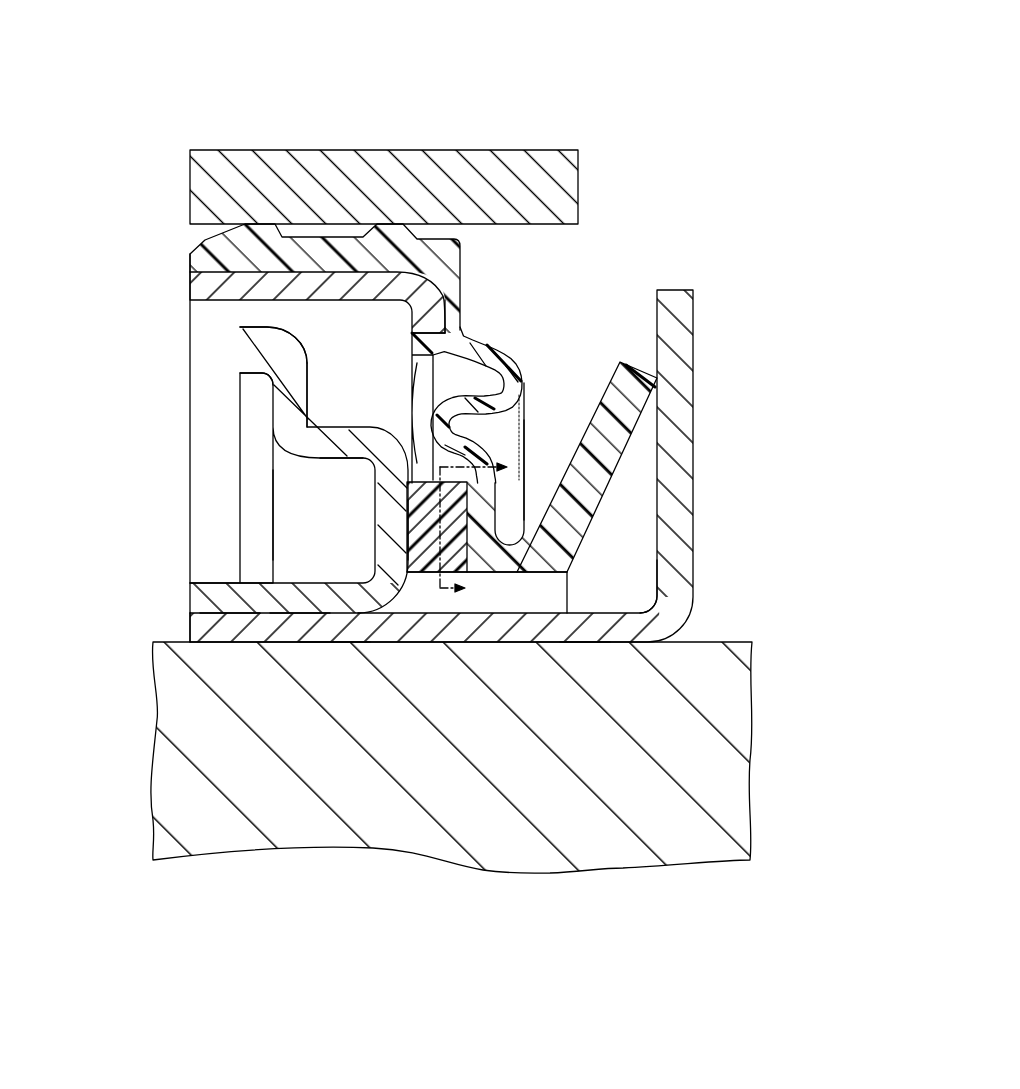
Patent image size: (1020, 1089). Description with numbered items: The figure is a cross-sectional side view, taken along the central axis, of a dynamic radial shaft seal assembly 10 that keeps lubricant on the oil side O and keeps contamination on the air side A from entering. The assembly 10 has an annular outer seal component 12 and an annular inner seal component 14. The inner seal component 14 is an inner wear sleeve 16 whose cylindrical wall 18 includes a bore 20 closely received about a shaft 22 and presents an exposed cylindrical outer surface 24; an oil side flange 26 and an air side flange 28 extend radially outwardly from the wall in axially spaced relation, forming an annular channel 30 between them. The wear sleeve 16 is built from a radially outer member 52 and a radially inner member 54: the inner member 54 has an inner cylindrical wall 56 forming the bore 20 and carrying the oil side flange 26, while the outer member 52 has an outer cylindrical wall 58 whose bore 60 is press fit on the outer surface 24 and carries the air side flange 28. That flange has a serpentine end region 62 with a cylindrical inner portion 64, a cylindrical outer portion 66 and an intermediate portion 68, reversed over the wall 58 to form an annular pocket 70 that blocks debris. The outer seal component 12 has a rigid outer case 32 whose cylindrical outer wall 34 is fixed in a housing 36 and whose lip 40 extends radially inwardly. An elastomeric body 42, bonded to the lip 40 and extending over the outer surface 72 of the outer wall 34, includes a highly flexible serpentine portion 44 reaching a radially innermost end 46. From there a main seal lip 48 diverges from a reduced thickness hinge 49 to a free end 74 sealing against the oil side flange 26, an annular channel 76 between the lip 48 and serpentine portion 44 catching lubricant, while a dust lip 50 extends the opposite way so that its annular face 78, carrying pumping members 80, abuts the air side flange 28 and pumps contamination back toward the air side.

The radial shaft seal assembly 10 is at (650, 100).
The outer seal component 12 is at (143, 188).
The inner seal component 14 is at (120, 625).
The inner wear sleeve 16 is at (738, 626).
The cylindrical wall 18 is at (418, 625).
The bore 20 is at (583, 647).
The shaft 22 is at (720, 704).
The exposed cylindrical outer surface 24 is at (598, 610).
The oil side flange 26 is at (680, 410).
The air side flange 28 is at (385, 525).
The annular channel 30 is at (624, 506).
The outer case 32 is at (188, 283).
The cylindrical outer wall 34 is at (235, 300).
The housing 36 is at (425, 160).
The lip 40 is at (437, 318).
The elastomeric body 42 is at (450, 331).
The serpentine portion 44 is at (410, 412).
The radially innermost end 46 is at (487, 620).
The main seal lip 48 is at (603, 392).
The hinge 49 is at (497, 558).
The dust lip 50 is at (427, 573).
The radially outer member 52 is at (188, 598).
The radially inner member 54 is at (188, 633).
The inner cylindrical wall 56 is at (333, 637).
The outer cylindrical wall 58 is at (300, 620).
The bore 60 is at (262, 613).
The serpentine end region 62 is at (351, 412).
The cylindrical inner portion 64 is at (322, 455).
The cylindrical outer portion 66 is at (257, 346).
The intermediate portion 68 is at (286, 382).
The annular pocket 70 is at (302, 523).
The outer surface 72 is at (237, 268).
The free end 74 is at (641, 362).
The annular channel 76 is at (550, 407).
The annular face 78 is at (404, 540).
The pumping member 80 is at (410, 518).